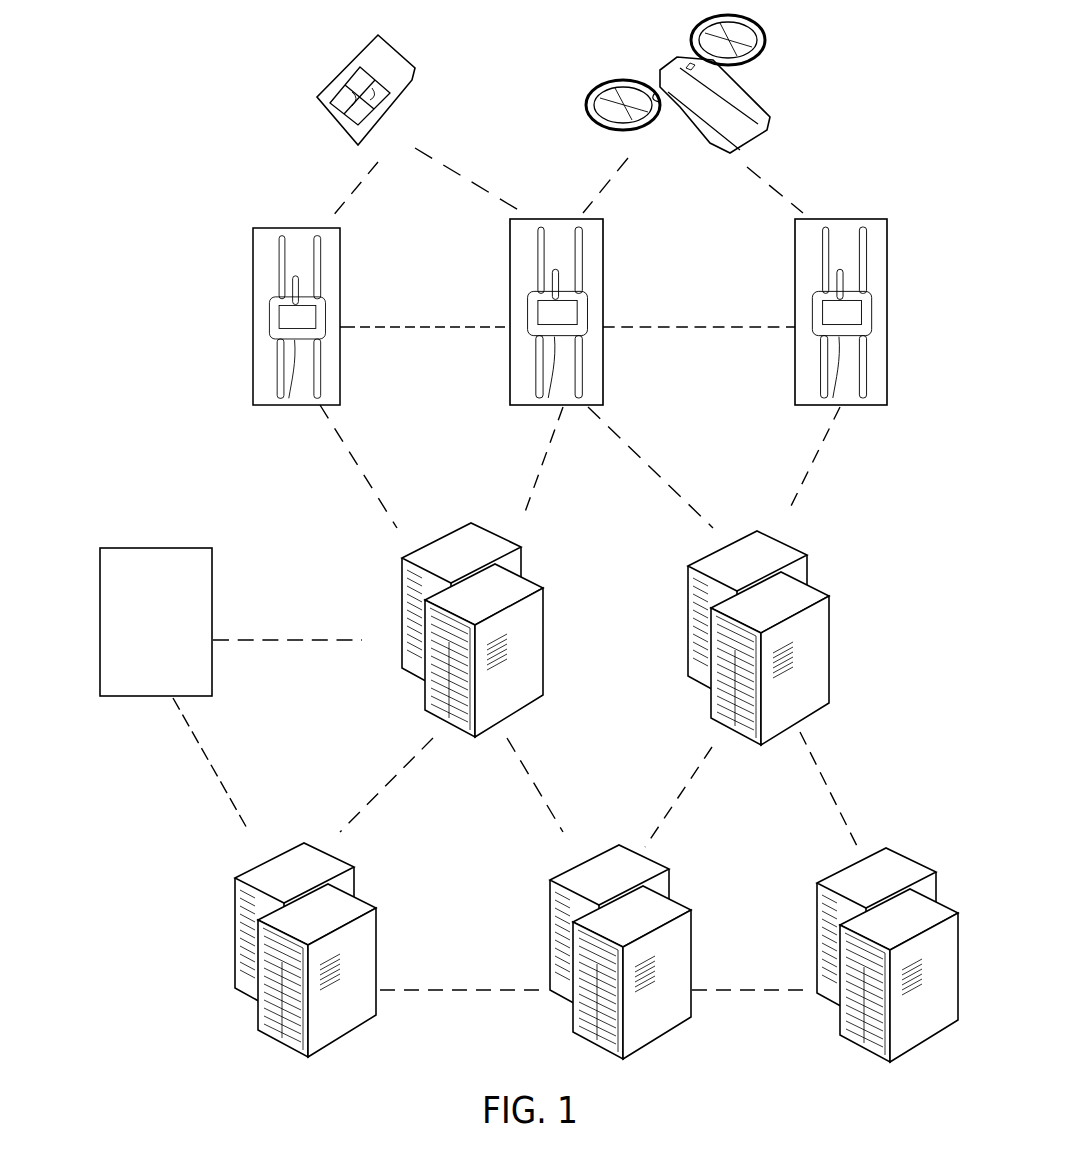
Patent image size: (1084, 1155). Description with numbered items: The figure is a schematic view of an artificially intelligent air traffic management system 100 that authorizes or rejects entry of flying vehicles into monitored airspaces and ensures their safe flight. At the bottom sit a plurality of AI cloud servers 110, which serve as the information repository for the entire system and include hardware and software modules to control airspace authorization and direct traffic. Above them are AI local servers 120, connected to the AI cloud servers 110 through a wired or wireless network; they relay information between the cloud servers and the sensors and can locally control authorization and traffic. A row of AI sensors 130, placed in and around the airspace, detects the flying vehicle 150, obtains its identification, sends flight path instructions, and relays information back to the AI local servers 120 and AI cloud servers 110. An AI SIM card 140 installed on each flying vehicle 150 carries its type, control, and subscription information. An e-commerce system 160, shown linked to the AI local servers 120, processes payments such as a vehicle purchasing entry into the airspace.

The artificially intelligent air traffic management system 100 is at (185, 136).
The AI cloud servers 110 is at (235, 960).
The AI local servers 120 is at (401, 628).
The AI sensor 130 is at (253, 325).
The AI SIM card 140 is at (318, 105).
The flying vehicle 150 is at (752, 92).
The e-commerce system 160 is at (100, 562).